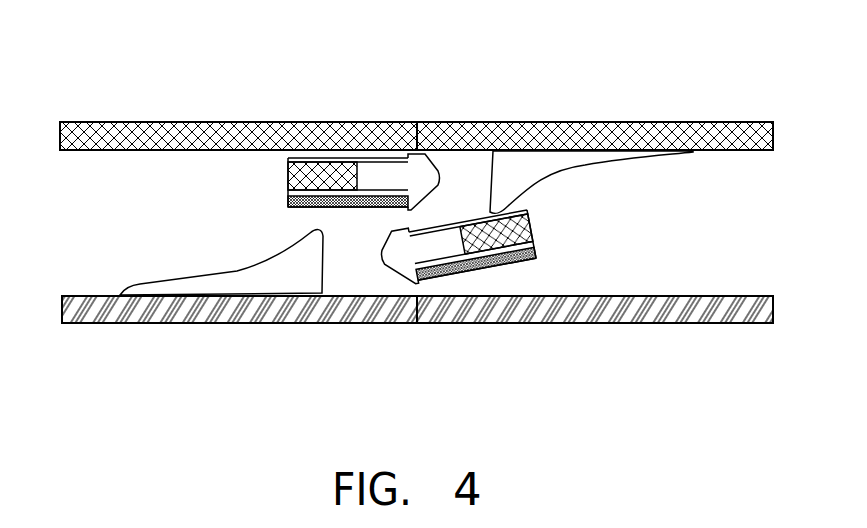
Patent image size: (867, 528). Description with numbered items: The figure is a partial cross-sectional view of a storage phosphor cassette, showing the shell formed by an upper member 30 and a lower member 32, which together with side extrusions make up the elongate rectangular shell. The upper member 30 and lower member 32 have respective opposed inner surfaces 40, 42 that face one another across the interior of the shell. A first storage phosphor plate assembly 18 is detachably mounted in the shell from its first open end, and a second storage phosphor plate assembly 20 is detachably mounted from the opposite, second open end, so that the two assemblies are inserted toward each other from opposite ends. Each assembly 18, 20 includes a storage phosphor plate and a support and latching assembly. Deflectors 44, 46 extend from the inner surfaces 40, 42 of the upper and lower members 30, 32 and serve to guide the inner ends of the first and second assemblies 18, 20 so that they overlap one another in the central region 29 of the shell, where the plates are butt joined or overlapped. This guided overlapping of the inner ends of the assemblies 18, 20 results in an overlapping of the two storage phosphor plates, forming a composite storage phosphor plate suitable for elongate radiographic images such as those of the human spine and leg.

The first storage phosphor plate assembly 18 is at (258, 181).
The second storage phosphor plate assembly 20 is at (560, 222).
The central region 29 is at (458, 100).
The upper member 30 is at (415, 125).
The lower member 32 is at (417, 314).
The inner surface 40 is at (108, 150).
The inner surface 42 is at (713, 295).
The deflector 44 is at (693, 153).
The deflector 46 is at (183, 280).